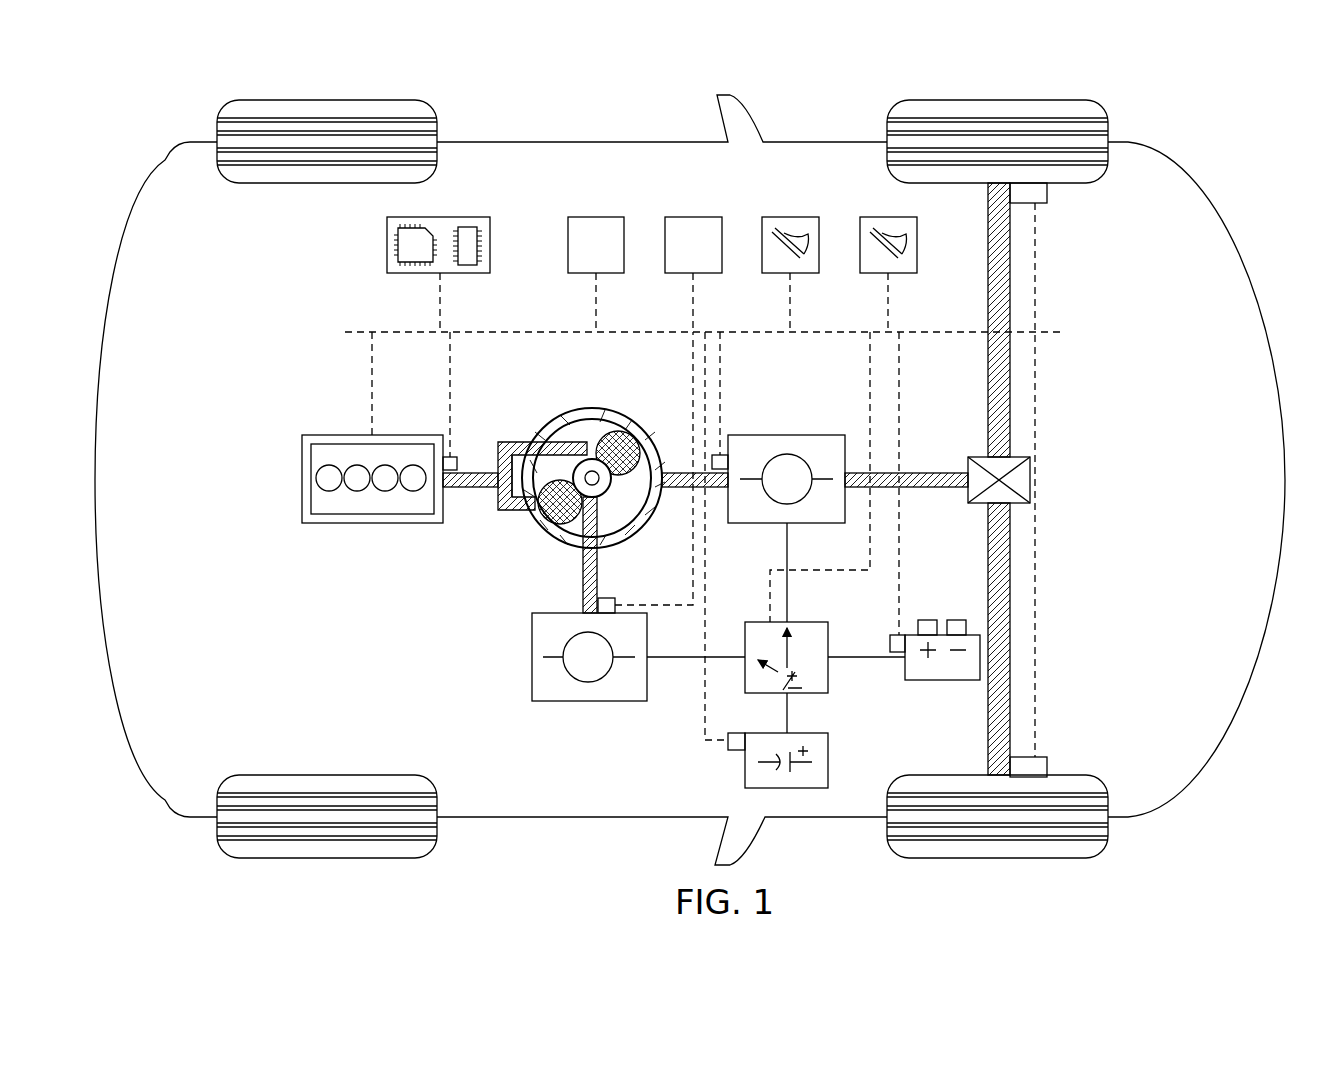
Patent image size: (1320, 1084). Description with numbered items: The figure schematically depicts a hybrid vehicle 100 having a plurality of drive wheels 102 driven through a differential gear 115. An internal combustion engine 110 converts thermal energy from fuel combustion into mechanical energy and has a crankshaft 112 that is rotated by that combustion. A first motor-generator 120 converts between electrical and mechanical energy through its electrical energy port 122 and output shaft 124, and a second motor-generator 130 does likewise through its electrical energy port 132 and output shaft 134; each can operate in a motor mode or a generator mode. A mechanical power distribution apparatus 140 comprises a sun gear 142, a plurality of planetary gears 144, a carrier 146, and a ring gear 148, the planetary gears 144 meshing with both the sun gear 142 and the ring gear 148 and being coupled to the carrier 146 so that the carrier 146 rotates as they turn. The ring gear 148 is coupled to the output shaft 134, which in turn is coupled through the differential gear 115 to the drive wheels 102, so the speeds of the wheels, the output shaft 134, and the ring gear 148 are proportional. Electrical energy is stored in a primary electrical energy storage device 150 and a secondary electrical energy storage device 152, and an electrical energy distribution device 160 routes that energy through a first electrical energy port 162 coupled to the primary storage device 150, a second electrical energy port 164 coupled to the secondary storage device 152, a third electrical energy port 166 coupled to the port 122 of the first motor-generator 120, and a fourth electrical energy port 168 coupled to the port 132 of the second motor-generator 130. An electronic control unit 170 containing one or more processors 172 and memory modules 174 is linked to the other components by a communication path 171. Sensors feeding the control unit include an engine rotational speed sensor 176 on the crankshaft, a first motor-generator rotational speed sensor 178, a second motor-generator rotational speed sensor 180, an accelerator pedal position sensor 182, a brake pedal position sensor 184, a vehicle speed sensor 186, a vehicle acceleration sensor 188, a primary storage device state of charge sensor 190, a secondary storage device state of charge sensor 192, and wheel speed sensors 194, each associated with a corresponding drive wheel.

The hybrid vehicle 100 is at (1225, 108).
The drive wheels 102 is at (1110, 128).
The internal combustion engine 110 is at (362, 525).
The crankshaft 112 is at (476, 490).
The differential gear 115 is at (1032, 478).
The first motor-generator 120 is at (585, 703).
The electrical energy port 122 is at (680, 660).
The output shaft 124 is at (580, 578).
The second motor-generator 130 is at (805, 433).
The electrical energy port 132 is at (790, 555).
The output shaft 134 is at (680, 490).
The mechanical power distribution apparatus 140 is at (590, 457).
The sun gear 142 is at (590, 473).
The planetary gears 144 is at (546, 556).
The carrier 146 is at (510, 440).
The ring gear 148 is at (644, 420).
The primary electrical energy storage device 150 is at (938, 682).
The secondary electrical energy storage device 152 is at (830, 760).
The electrical energy distribution device 160 is at (810, 697).
The first electrical energy port 162 is at (845, 660).
The second electrical energy port 164 is at (782, 705).
The third electrical energy port 166 is at (730, 640).
The fourth electrical energy port 168 is at (790, 605).
The electronic control unit 170 is at (409, 268).
The communication path 171 is at (345, 334).
The processors 172 is at (405, 245).
The memory modules 174 is at (470, 258).
The engine rotational speed sensor 176 is at (460, 455).
The first motor-generator rotational speed sensor 178 is at (610, 598).
The second motor-generator rotational speed sensor 180 is at (710, 462).
The accelerator pedal position sensor 182 is at (793, 216).
The brake pedal position sensor 184 is at (917, 258).
The vehicle speed sensor 186 is at (598, 216).
The vehicle acceleration sensor 188 is at (695, 216).
The primary electrical energy storage device state of charge sensor 190 is at (888, 640).
The secondary electrical energy storage device state of charge sensor 192 is at (730, 752).
The wheel speed sensors 194 is at (1050, 195).